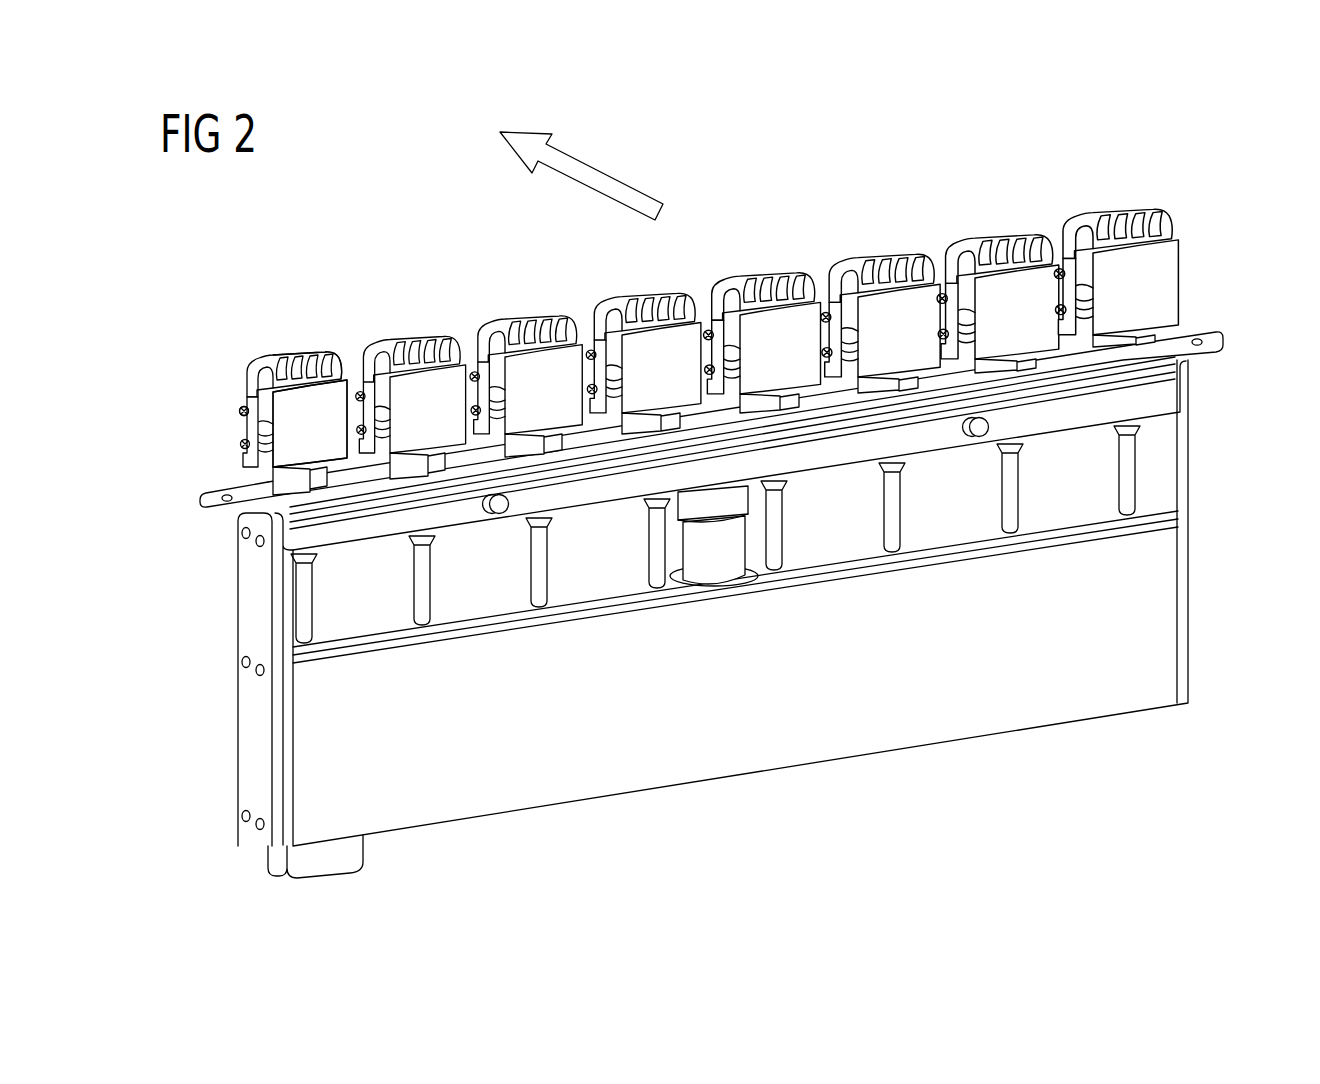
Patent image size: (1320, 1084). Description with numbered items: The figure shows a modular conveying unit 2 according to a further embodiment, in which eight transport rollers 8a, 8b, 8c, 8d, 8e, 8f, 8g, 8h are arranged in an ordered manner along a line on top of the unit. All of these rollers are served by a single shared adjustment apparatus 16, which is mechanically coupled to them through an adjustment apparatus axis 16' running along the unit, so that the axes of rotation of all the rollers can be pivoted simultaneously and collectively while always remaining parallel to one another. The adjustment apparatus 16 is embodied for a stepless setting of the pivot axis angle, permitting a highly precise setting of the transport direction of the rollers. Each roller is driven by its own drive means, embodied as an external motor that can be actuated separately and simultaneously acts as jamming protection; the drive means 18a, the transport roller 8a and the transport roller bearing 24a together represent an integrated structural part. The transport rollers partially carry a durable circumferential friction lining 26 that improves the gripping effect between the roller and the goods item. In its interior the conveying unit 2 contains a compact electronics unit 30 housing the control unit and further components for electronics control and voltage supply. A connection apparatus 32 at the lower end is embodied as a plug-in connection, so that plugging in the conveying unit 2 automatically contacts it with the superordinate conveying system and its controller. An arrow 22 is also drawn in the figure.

The modular conveying unit 2 is at (1194, 176).
The transport roller 8a is at (290, 398).
The transport roller 8b is at (408, 380).
The transport roller 8c is at (525, 358).
The transport roller 8d is at (643, 337).
The transport roller 8e is at (761, 318).
The transport roller 8f is at (879, 296).
The transport roller 8g is at (997, 276).
The transport roller 8h is at (1115, 254).
The adjustment apparatus 16 is at (721, 563).
The adjustment apparatus axis 16' is at (711, 430).
The drive means 18a is at (293, 424).
The direction arrow 22 is at (607, 171).
The transport roller bearing 24a is at (236, 412).
The circumferential friction lining 26 is at (314, 368).
The electronics unit 30 is at (1212, 515).
The connection apparatus 32 is at (357, 856).